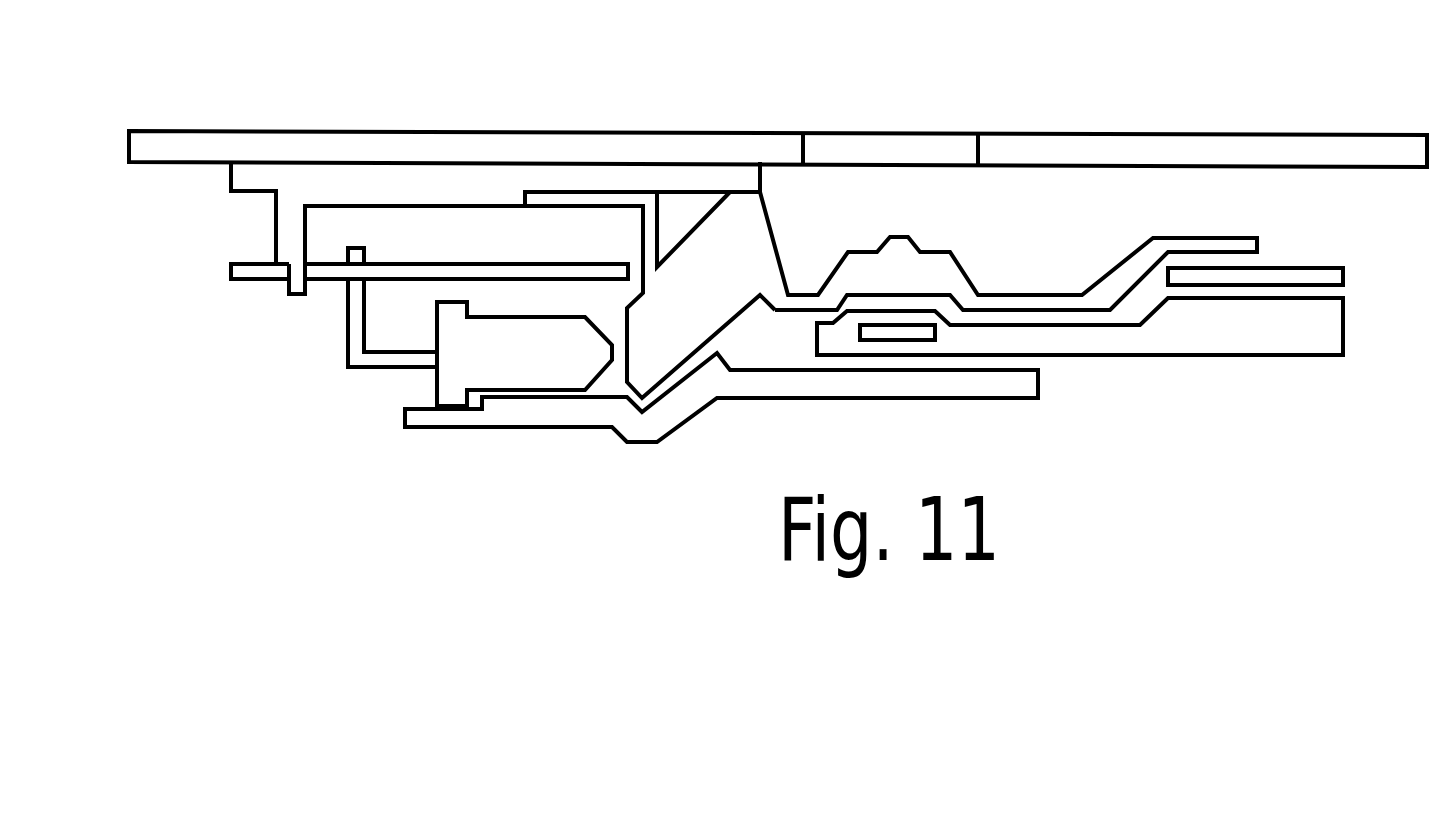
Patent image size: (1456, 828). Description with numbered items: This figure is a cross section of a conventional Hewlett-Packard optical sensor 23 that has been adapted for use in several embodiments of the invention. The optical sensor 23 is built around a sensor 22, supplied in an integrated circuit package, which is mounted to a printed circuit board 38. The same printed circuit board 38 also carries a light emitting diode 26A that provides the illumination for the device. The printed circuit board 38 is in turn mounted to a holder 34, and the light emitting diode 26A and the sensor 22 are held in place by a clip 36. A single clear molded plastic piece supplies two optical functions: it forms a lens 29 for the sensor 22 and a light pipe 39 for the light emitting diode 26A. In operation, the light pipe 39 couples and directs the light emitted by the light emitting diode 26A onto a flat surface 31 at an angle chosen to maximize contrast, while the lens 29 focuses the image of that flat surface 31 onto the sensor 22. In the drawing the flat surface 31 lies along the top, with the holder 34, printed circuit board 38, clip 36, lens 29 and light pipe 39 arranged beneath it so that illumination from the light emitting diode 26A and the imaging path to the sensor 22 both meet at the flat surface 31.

The sensor 22 is at (882, 333).
The HP optical sensor 23 is at (1080, 414).
The light emitting diode 26A is at (478, 352).
The lens 29 is at (905, 268).
The flat surface 31 is at (827, 137).
The holder 34 is at (300, 178).
The clip 36 is at (602, 415).
The printed circuit board 38 is at (256, 271).
The light pipe 39 is at (680, 281).